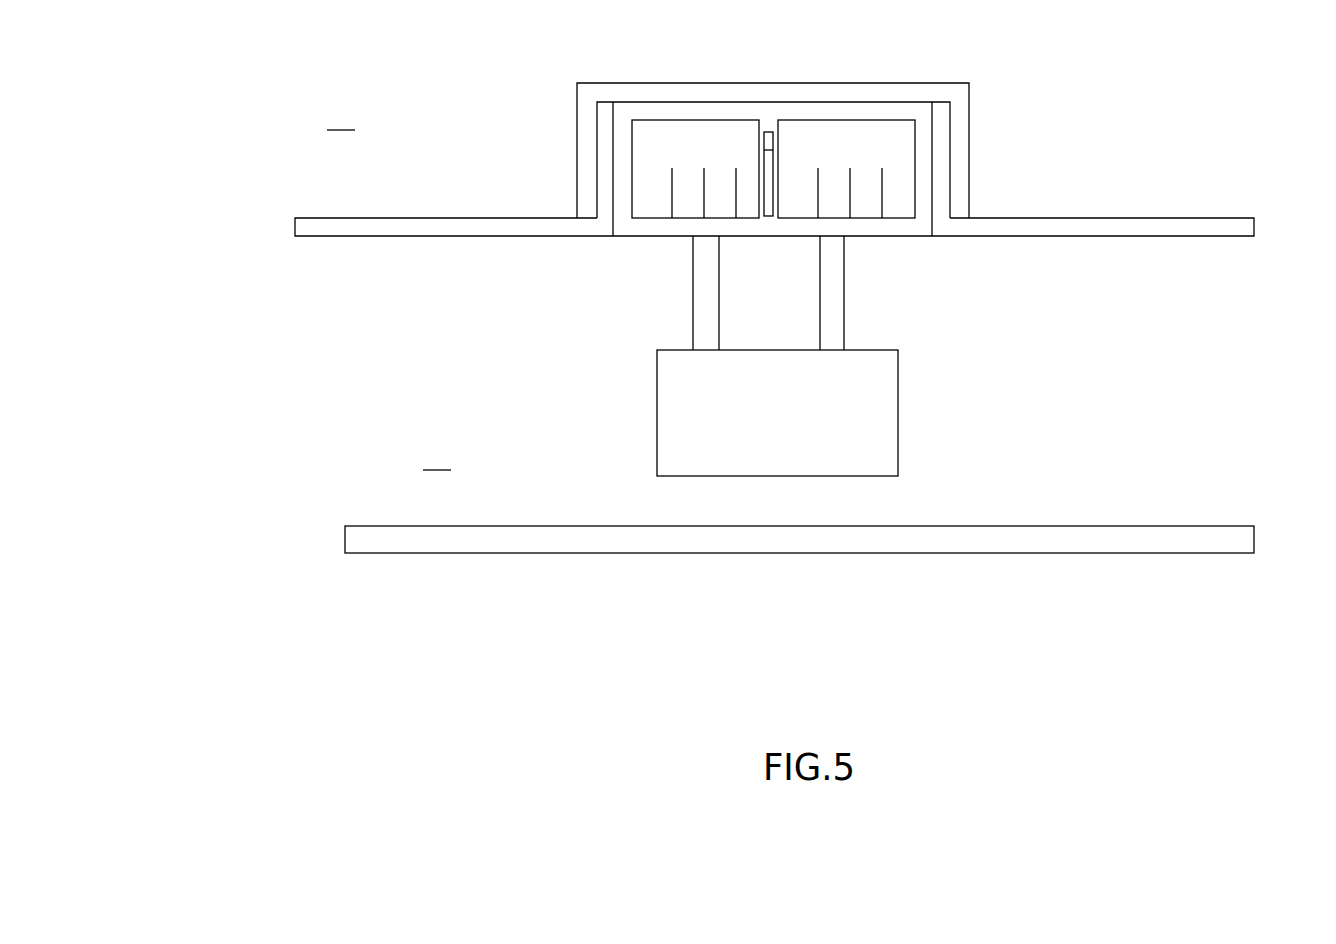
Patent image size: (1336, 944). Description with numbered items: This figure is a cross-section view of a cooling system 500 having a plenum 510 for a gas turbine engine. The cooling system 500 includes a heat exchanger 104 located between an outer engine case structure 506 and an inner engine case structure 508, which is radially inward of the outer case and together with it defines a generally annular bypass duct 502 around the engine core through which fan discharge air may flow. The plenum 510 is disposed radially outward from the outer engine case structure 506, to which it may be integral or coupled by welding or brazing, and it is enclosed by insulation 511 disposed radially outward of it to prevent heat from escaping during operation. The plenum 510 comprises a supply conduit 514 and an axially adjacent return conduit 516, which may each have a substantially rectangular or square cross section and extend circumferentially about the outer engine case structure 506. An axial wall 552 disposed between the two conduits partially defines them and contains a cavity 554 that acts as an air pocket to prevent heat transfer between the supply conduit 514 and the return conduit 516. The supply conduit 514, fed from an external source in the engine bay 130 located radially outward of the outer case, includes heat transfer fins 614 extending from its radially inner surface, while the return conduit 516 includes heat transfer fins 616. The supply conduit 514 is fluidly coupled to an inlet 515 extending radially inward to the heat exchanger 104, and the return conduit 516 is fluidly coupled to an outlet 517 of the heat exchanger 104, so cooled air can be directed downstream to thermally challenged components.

The cooling system 500 is at (287, 175).
The engine bay 130 is at (355, 130).
The insulation 511 is at (593, 110).
The plenum 510 is at (633, 185).
The supply conduit 514 is at (712, 135).
The return conduit 516 is at (863, 135).
The axial wall 552 is at (760, 142).
The cavity 554 is at (768, 165).
The heat transfer fins 614 is at (672, 197).
The heat transfer fins 616 is at (882, 192).
The inlet 515 is at (707, 327).
The outlet 517 is at (830, 282).
The heat exchanger 104 is at (770, 430).
The outer engine case structure 506 is at (1102, 222).
The inner engine case structure 508 is at (1119, 540).
The bypass duct 502 is at (451, 470).